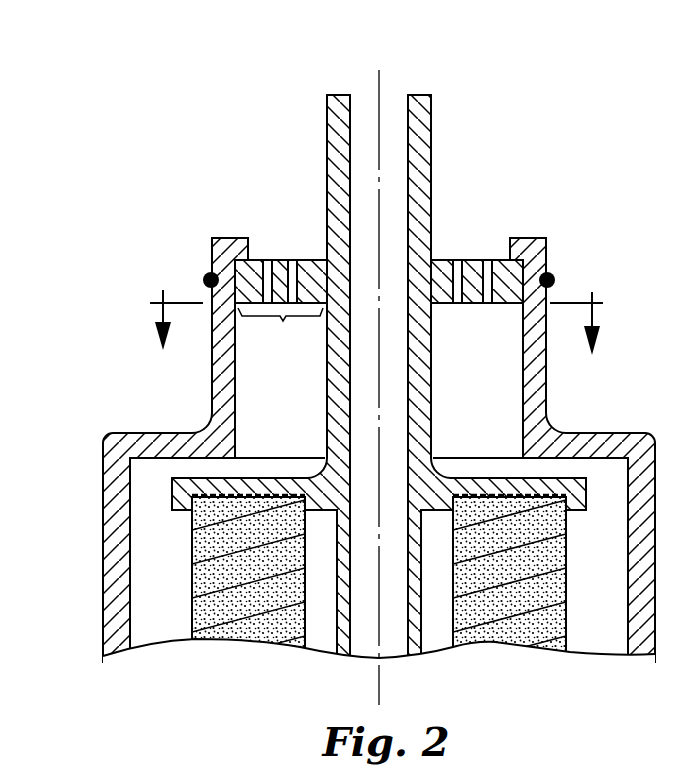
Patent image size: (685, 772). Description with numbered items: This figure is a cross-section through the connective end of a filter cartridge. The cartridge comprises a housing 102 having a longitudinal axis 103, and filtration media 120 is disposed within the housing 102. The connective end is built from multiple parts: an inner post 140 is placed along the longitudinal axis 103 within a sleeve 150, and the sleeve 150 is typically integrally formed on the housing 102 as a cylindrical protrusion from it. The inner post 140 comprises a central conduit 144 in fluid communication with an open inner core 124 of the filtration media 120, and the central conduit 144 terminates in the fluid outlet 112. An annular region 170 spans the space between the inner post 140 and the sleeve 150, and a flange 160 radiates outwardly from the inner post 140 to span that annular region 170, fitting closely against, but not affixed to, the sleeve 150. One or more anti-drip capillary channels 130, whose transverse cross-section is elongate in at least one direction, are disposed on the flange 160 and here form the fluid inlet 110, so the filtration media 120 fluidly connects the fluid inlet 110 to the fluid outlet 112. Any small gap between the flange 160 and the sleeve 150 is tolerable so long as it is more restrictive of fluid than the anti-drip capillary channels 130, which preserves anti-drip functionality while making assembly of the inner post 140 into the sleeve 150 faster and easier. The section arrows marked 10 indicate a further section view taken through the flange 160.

The housing 102 is at (108, 527).
The longitudinal axis 103 is at (380, 690).
The fluid inlet 110 is at (258, 258).
The fluid outlet 112 is at (392, 102).
The filtration media 120 is at (217, 640).
The open inner core 124 is at (321, 662).
The anti-drip capillary channels 130 is at (296, 270).
The inner post 140 is at (432, 150).
The central conduit 144 is at (350, 117).
The sleeve 150 is at (538, 416).
The flange 160 is at (440, 296).
The annular region 170 is at (280, 331).
The section view indicator 10 is at (373, 338).